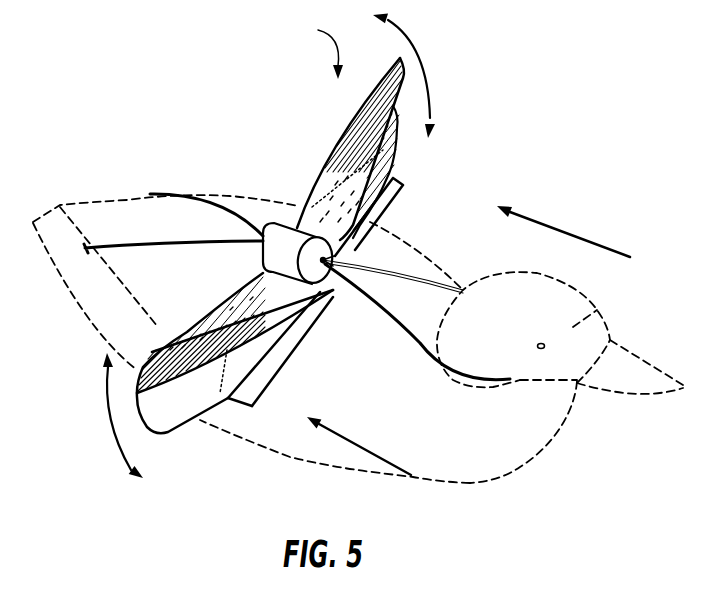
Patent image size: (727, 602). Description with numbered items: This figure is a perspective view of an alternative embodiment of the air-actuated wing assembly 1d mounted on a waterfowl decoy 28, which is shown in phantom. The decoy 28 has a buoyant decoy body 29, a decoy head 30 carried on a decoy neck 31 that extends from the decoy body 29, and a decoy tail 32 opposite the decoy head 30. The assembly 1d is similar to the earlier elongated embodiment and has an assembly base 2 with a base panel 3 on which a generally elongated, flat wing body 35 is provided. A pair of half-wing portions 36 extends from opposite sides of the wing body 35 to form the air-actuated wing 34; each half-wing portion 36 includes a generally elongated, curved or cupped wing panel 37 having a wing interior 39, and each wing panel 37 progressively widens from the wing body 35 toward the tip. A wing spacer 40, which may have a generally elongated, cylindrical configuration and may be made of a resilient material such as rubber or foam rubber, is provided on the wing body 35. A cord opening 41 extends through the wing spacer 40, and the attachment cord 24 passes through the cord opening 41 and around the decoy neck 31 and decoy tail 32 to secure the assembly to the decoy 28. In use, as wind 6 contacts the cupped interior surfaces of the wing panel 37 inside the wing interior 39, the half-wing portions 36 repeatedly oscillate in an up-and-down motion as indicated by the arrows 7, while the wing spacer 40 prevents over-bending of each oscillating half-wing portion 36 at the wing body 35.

The air-actuated wing assembly 1d is at (265, 268).
The assembly base 2 is at (259, 418).
The base panel 3 is at (262, 376).
The wind 6 is at (587, 237).
The arrows 7 is at (425, 60).
The attachment cord 24 is at (418, 342).
The decoy 28 is at (498, 494).
The decoy body 29 is at (426, 481).
The decoy head 30 is at (598, 313).
The decoy neck 31 is at (470, 388).
The decoy tail 32 is at (103, 194).
The air-actuated wing 34 is at (309, 46).
The wing body 35 is at (326, 268).
The half-wing portions 36 is at (348, 97).
The wing panel 37 is at (362, 123).
The wing interior 39 is at (402, 165).
The wing spacer 40 is at (285, 233).
The cord opening 41 is at (350, 235).